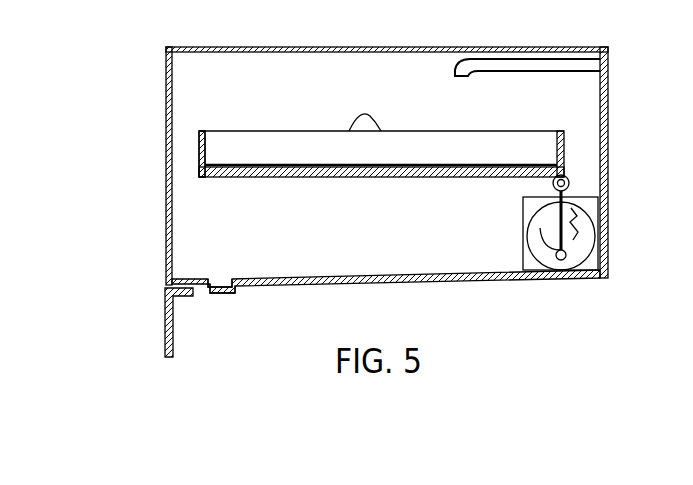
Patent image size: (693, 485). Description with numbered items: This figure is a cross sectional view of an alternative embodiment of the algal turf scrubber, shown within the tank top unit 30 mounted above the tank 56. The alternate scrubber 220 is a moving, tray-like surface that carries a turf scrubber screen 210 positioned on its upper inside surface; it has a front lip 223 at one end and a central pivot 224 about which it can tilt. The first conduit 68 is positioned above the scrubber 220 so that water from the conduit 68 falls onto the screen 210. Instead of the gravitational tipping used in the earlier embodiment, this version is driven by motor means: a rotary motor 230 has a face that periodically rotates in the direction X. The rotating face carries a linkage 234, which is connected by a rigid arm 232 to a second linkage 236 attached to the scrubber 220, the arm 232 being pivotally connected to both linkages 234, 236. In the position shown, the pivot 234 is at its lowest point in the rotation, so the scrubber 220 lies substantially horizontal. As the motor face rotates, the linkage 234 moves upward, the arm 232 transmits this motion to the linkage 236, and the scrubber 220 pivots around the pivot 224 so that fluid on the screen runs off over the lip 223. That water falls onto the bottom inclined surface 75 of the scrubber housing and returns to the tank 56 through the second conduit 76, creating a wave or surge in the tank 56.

The tank top unit 30 is at (158, 128).
The tank 56 is at (165, 318).
The first conduit 68 is at (511, 73).
The bottom inclined surface 75 is at (450, 279).
The second conduit 76 is at (222, 293).
The turf scrubber screen 210 is at (272, 165).
The algal turf scrubber 220 is at (333, 180).
The front lip 223 is at (198, 158).
The central pivot 224 is at (370, 127).
The rotary motor 230 is at (532, 270).
The rigid arm 232 is at (548, 212).
The linkage 234 is at (563, 258).
The linkage 236 is at (569, 183).